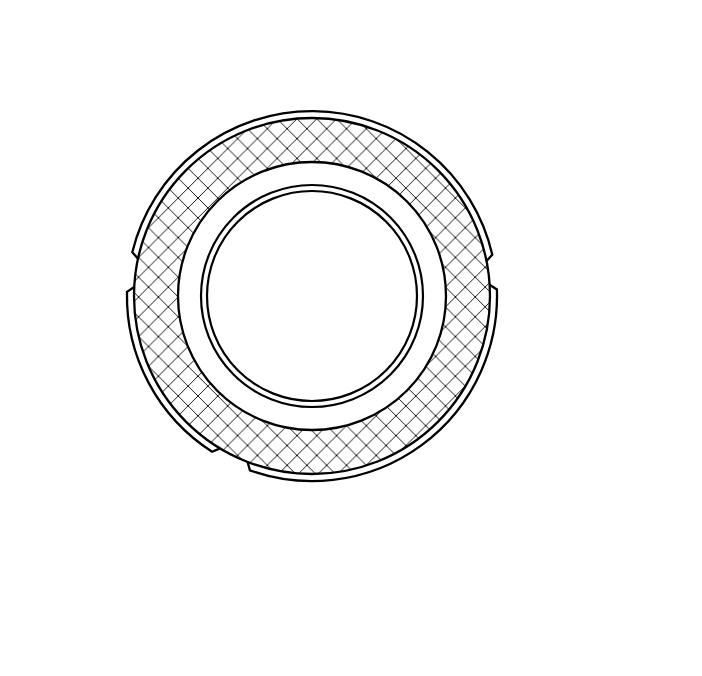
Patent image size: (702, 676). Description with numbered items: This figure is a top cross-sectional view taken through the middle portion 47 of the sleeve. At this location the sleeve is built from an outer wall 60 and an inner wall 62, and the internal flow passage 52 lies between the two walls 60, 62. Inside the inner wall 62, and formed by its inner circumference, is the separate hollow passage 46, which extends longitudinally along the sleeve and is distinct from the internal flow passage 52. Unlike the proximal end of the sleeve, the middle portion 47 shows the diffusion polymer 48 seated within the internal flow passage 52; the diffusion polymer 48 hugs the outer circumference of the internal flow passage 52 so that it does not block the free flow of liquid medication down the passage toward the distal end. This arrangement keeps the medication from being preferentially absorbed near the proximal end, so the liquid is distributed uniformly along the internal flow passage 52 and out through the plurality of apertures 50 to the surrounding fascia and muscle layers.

The middle portion 47 is at (113, 125).
The diffusion polymer 48 is at (450, 208).
The apertures 50 is at (135, 278).
The internal flow passage 52 is at (307, 172).
The outer wall 60 is at (141, 219).
The inner wall 62 is at (318, 399).
The hollow passage 46 is at (328, 302).